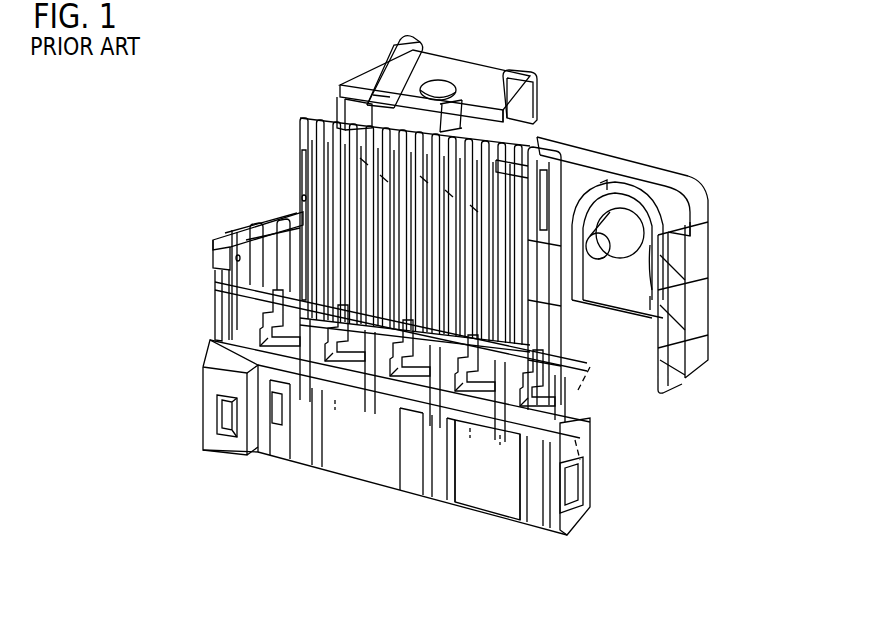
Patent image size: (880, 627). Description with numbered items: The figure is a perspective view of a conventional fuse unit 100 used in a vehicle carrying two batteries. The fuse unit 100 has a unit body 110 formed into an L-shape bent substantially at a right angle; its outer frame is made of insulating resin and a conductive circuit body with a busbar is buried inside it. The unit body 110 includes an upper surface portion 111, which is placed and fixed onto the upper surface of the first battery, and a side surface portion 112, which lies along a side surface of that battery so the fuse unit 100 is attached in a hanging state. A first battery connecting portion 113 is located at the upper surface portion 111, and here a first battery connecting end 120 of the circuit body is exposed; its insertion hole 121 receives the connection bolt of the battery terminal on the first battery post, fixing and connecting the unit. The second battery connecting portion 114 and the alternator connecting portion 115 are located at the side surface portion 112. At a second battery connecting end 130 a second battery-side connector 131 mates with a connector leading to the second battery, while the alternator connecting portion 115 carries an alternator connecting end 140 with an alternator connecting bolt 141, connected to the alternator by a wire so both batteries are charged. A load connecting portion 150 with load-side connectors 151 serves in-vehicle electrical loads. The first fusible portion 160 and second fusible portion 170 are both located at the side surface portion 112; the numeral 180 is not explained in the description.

The fuse unit 100 is at (148, 125).
The unit body 110 is at (283, 132).
The upper surface portion 111 is at (356, 60).
The side surface portion 112 is at (298, 173).
The first battery connecting portion 113 is at (375, 52).
The second battery connecting portion 114 is at (202, 397).
The alternator connecting portion 115 is at (707, 210).
The first battery connecting end 120 is at (483, 80).
The insertion hole 121 is at (440, 82).
The second battery connecting end 130 is at (205, 450).
The second battery-side connector 131 is at (233, 440).
The alternator connecting end 140 is at (641, 190).
The alternator connecting bolt 141 is at (619, 238).
The load connecting portion 150 is at (592, 477).
The load-side connectors 151 is at (488, 500).
The first fusible portion 160 is at (541, 160).
The second fusible portion 170 is at (240, 258).
The terminals 180 is at (455, 400).